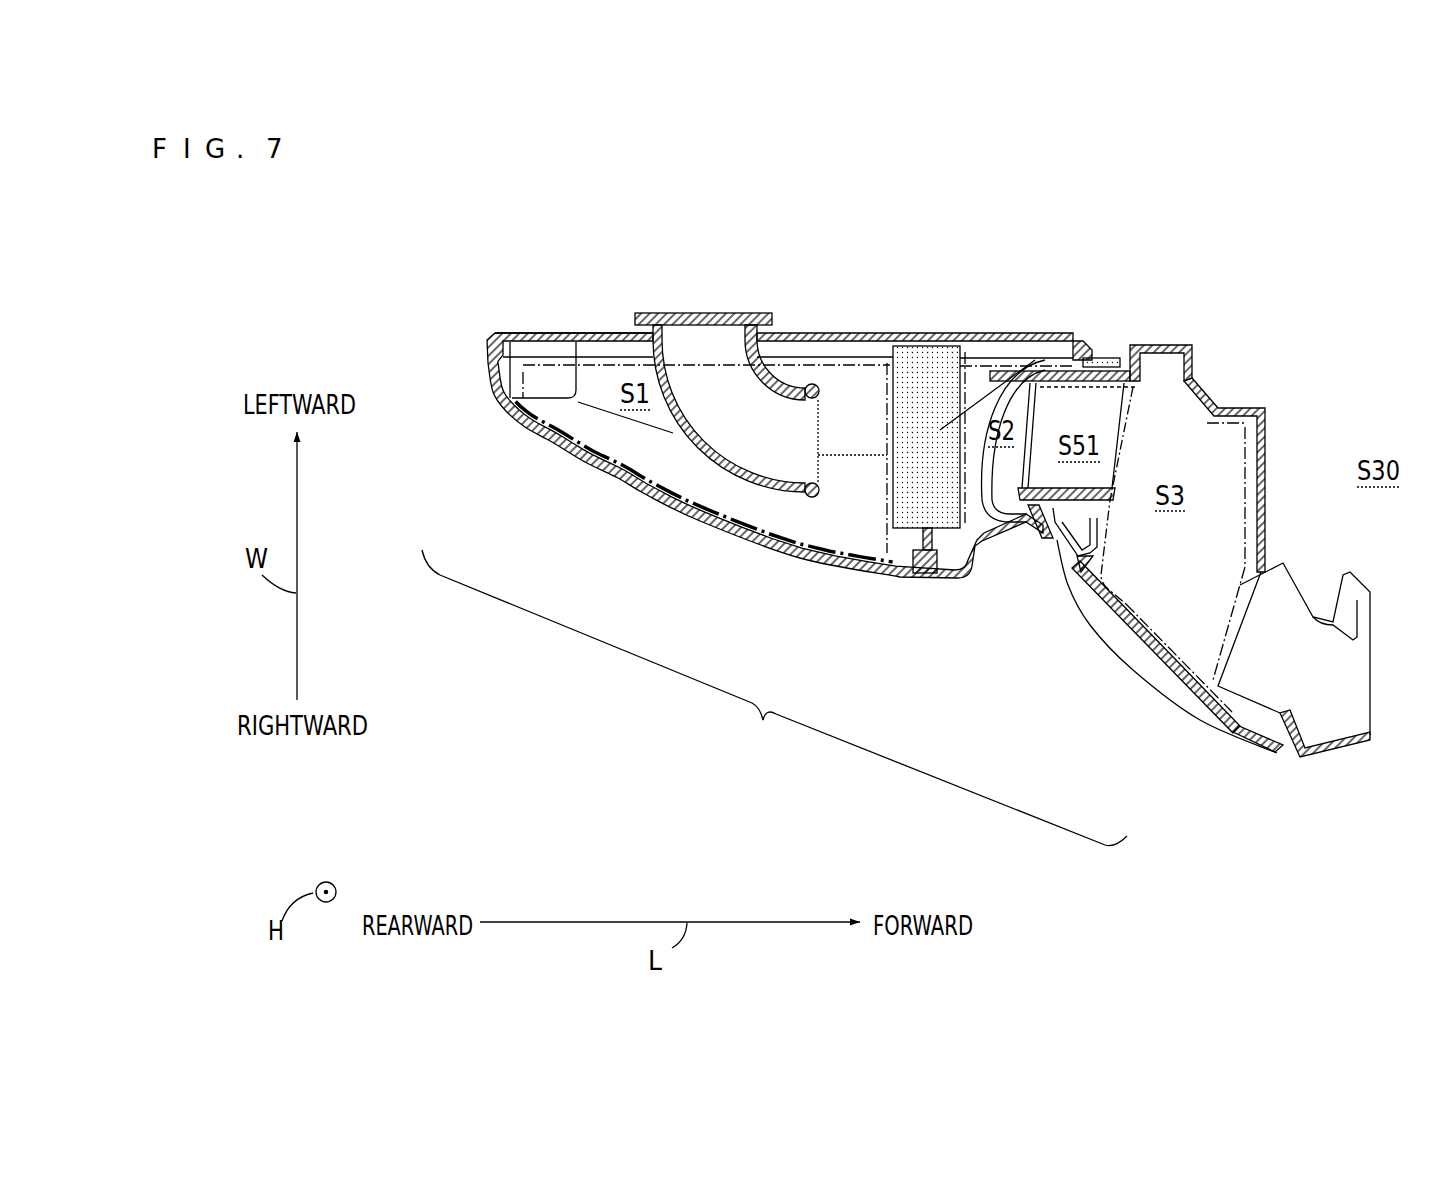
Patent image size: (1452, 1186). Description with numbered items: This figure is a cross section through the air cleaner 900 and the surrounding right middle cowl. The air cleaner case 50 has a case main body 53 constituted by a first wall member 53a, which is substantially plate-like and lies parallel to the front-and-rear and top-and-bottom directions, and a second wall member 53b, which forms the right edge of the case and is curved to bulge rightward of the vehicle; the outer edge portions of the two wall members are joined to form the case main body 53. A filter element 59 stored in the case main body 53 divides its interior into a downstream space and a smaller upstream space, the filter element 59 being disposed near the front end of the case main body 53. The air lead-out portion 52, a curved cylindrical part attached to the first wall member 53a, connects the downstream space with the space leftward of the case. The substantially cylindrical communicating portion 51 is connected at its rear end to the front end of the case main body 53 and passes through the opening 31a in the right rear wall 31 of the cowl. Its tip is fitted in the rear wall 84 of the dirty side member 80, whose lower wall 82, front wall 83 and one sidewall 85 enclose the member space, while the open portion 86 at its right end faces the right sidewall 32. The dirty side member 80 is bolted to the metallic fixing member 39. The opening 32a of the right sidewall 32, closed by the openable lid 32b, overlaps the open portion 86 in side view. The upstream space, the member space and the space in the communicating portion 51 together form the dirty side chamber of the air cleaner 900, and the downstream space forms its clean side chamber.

The right rear wall 31 is at (1043, 552).
The opening 31a is at (1068, 540).
The right sidewall 32 is at (1328, 752).
The opening 32a is at (1155, 645).
The lid 32b is at (1185, 705).
The fixing member 39 is at (1107, 355).
The air cleaner case 50 is at (678, 522).
The communicating portion 51 is at (1080, 357).
The air lead-out portion 52 is at (672, 420).
The case main body 53 is at (711, 387).
The first wall member 53a is at (593, 333).
The second wall member 53b is at (540, 440).
The filter element 59 is at (900, 492).
The dirty side member 80 is at (1237, 485).
The lower wall 82 is at (1193, 395).
The front wall 83 is at (1263, 498).
The rear wall 84 is at (1123, 362).
The one sidewall 85 is at (1172, 345).
The open portion 86 is at (1195, 586).
The air cleaner 900 is at (774, 698).